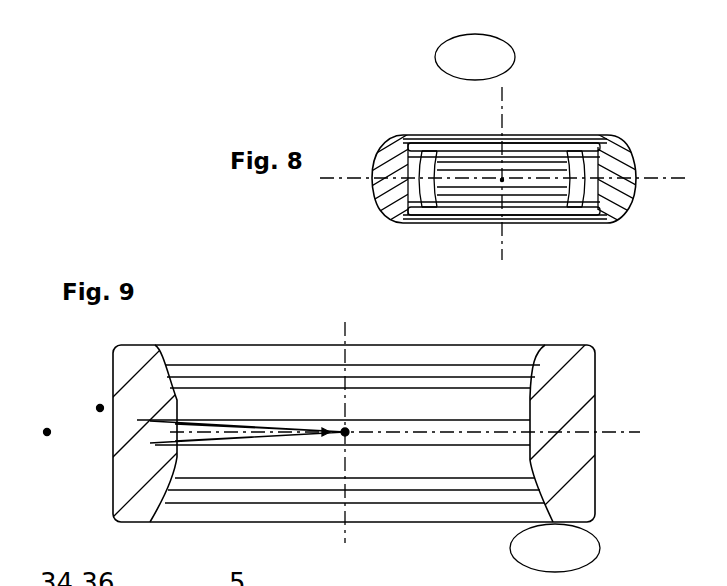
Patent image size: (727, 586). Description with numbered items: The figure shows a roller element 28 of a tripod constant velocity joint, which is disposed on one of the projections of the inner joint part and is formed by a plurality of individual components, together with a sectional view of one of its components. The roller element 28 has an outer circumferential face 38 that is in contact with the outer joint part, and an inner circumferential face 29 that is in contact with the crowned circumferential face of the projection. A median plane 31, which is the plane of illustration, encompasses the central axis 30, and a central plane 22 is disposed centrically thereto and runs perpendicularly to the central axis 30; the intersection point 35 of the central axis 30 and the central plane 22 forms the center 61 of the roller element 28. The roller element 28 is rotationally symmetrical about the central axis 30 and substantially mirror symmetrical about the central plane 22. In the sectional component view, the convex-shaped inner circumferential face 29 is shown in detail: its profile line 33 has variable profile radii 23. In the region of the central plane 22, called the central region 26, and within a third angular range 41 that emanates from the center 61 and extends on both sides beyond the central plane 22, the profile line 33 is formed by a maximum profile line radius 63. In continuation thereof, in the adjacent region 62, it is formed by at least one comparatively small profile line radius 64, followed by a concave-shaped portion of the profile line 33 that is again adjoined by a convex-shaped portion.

In FIG. 8, the central plane 22 is at (348, 178).
In FIG. 9, the central plane 22 is at (617, 433).
In FIG. 9, the profile radii 23 is at (166, 393).
In FIG. 9, the central region 26 is at (177, 455).
In FIG. 8, the roller element 28 is at (592, 105).
In FIG. 9, the roller element 28 is at (573, 332).
In FIG. 8, the inner circumferential face 29 is at (444, 167).
In FIG. 9, the inner circumferential face 29 is at (163, 370).
In FIG. 8, the central axis 30 is at (503, 113).
In FIG. 9, the central axis 30 is at (345, 325).
In FIG. 8, the median plane 31 is at (475, 57).
In FIG. 9, the median plane 31 is at (555, 548).
In FIG. 9, the profile line 33 is at (540, 365).
In FIG. 8, the intersection point 35 is at (502, 180).
In FIG. 8, the outer circumferential face 38 is at (373, 170).
In FIG. 9, the third angular range 41 is at (226, 468).
In FIG. 8, the center 61 is at (502, 180).
In FIG. 9, the center 61 is at (345, 432).
In FIG. 9, the adjacent region 62 is at (178, 397).
In FIG. 9, the maximum profile line radius 63 is at (170, 432).
In FIG. 9, the profile line radius 64 is at (158, 393).